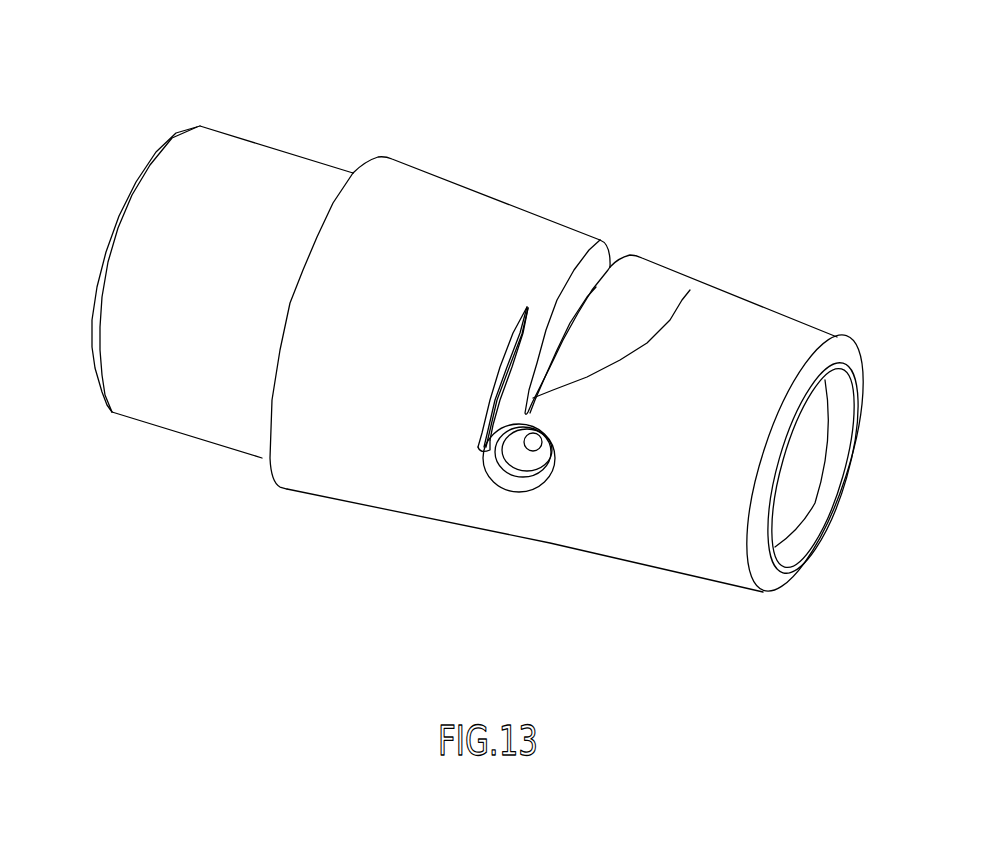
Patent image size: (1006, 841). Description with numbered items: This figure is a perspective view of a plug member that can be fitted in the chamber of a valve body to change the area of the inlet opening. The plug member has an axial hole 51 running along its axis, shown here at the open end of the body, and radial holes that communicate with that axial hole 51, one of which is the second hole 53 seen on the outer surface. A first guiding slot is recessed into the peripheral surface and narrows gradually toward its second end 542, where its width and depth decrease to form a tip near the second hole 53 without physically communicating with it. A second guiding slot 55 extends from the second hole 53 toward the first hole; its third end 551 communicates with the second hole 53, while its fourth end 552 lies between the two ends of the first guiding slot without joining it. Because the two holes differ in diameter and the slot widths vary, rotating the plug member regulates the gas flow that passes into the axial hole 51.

The axial hole 51 is at (805, 455).
The second hole 53 is at (530, 462).
The second end 542 is at (690, 290).
The second guiding slot 55 is at (492, 381).
The third end 551 is at (478, 448).
The fourth end 552 is at (527, 305).